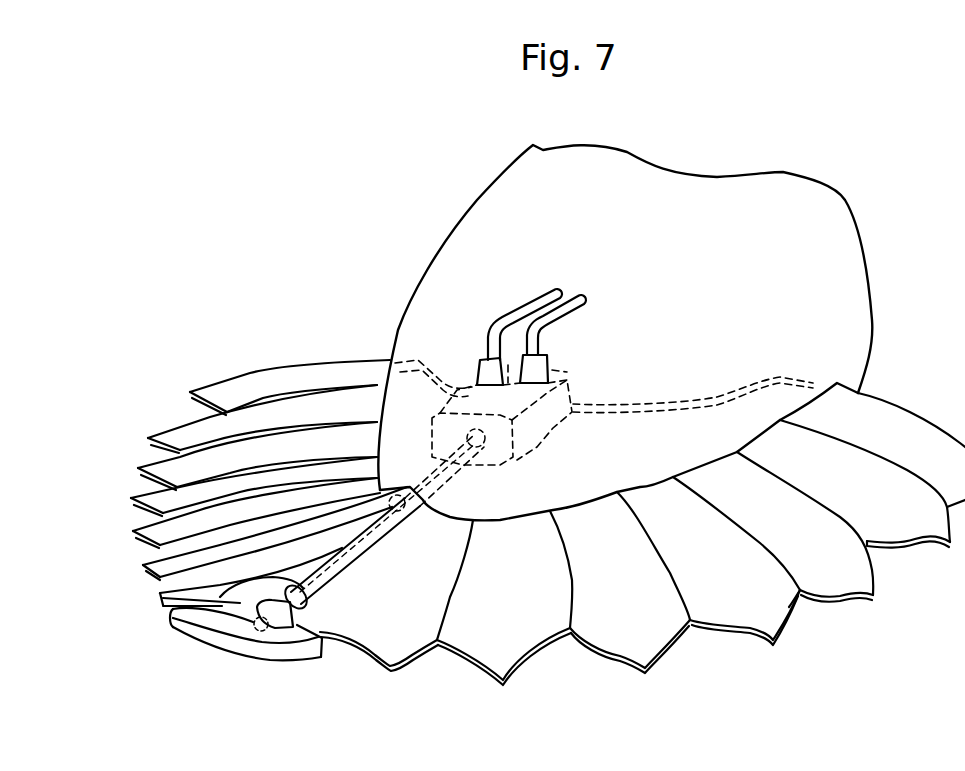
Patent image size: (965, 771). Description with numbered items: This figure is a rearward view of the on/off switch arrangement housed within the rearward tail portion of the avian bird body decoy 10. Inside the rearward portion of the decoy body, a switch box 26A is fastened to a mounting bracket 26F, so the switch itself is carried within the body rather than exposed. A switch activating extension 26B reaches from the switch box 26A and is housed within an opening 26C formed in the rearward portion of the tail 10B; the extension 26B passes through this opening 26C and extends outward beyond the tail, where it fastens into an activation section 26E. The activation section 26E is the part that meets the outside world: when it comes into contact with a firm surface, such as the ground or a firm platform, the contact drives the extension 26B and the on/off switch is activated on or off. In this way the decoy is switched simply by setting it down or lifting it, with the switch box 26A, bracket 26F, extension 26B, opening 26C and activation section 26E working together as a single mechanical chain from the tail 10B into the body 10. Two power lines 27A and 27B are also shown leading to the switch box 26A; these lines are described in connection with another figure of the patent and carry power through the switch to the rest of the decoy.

The avian bird body decoy 10 is at (545, 222).
The tail 10B is at (320, 614).
The switch box 26A is at (525, 418).
The switch activating extension 26B is at (440, 466).
The opening 26C is at (357, 553).
The activation section 26E is at (232, 645).
The mounting bracket 26F is at (628, 420).
The power line 27A is at (527, 312).
The power line 27B is at (557, 318).